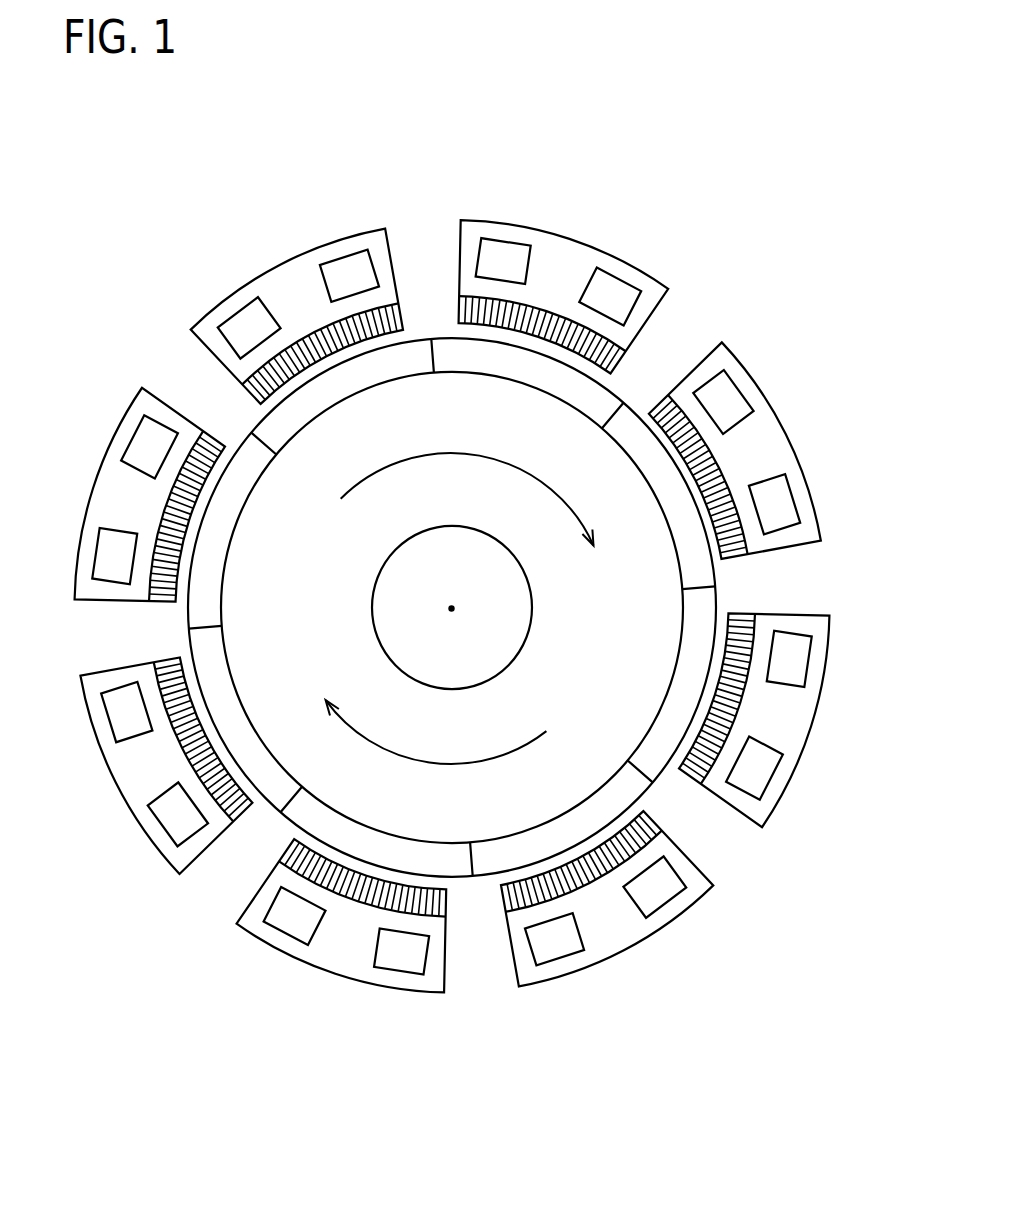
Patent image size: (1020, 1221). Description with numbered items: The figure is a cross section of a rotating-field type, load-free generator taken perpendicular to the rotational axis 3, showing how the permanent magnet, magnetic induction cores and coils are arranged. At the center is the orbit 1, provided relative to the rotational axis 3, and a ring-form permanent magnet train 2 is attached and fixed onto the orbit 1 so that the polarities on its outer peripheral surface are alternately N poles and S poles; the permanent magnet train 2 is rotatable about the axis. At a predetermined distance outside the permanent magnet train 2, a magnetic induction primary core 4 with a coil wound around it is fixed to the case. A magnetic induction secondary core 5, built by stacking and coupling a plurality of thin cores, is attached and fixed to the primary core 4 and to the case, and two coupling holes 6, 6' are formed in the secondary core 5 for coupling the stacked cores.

The orbit 1 is at (449, 725).
The permanent magnet train 2 is at (203, 608).
The rotational axis 3 is at (463, 652).
The magnetic induction primary core 4 is at (595, 357).
The magnetic induction secondary core 5 is at (297, 293).
The coupling hole 6 is at (219, 281).
The coupling hole 6' is at (349, 218).